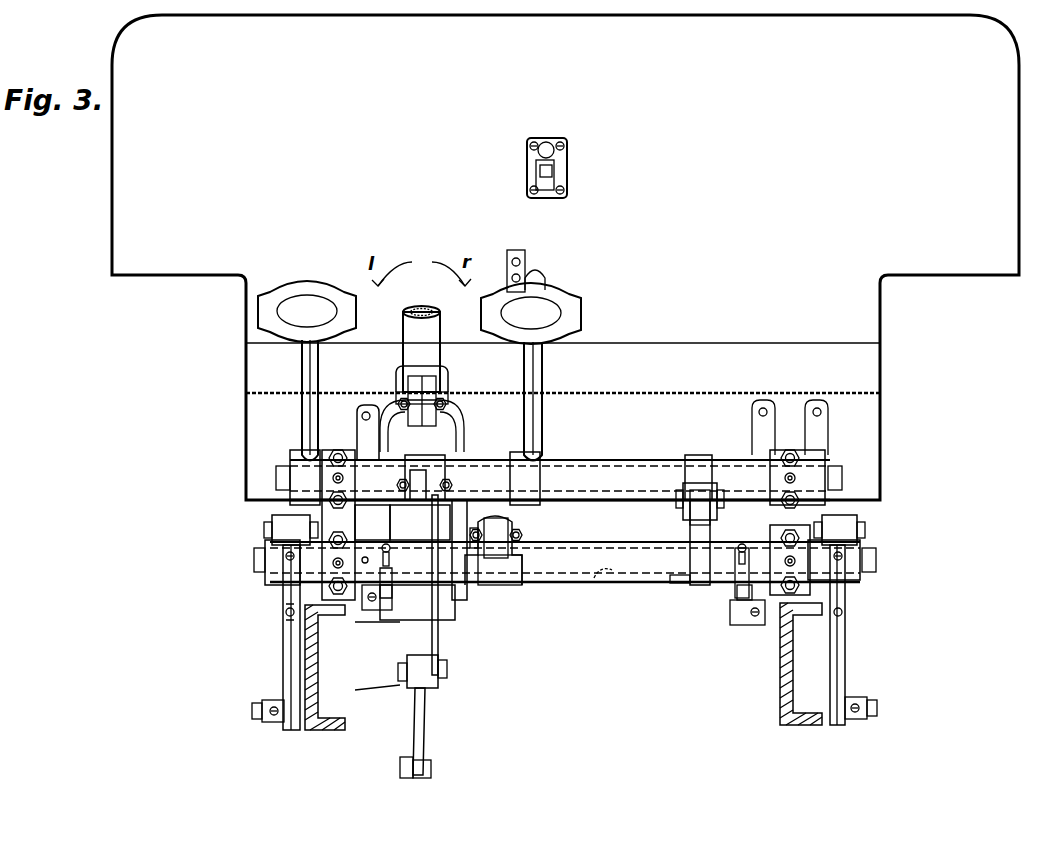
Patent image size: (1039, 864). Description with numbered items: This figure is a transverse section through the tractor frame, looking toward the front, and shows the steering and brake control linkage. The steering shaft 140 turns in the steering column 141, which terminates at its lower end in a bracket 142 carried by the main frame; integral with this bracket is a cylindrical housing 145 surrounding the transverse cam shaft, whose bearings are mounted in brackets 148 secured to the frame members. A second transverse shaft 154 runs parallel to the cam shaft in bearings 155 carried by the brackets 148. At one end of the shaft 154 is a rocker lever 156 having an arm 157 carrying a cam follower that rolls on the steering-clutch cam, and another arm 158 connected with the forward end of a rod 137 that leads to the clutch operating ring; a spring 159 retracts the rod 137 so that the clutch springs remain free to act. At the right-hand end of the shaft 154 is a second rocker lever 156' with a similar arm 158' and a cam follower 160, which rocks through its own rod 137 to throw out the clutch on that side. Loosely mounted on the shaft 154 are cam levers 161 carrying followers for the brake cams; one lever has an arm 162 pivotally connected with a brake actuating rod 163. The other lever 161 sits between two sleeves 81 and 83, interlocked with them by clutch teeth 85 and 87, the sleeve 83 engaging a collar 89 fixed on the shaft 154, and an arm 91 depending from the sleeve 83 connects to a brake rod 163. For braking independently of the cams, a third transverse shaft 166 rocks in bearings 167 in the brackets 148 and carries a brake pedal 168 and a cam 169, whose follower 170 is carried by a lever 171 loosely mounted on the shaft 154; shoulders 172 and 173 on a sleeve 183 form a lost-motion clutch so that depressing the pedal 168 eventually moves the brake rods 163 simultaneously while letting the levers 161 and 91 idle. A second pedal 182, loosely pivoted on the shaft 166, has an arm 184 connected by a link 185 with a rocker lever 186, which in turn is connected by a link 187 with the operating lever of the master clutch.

The sleeve 81 is at (548, 545).
The sleeve 83 is at (407, 545).
The clutch teeth 85 is at (516, 550).
The clutch tooth 87 is at (474, 530).
The collar 89 is at (364, 545).
The arm 91 is at (392, 578).
The rod 137 is at (265, 720).
The shaft 140 is at (421, 308).
The steering column 141 is at (432, 358).
The bracket 142 is at (446, 440).
The cylindrical housing 145 is at (445, 615).
The brackets 148 is at (350, 698).
The second transverse shaft 154 is at (596, 578).
The bearings 155 is at (330, 600).
The rocker lever 156 is at (257, 568).
The second rocker lever 156' is at (860, 551).
The arm 157 is at (285, 528).
The arm 158 is at (267, 637).
The arm 158' is at (866, 635).
The spring 159 is at (285, 612).
The cam follower 160 is at (845, 522).
The cam levers 161 is at (494, 560).
The arm 162 is at (742, 600).
The brake actuating rod 163 is at (375, 605).
The third transverse shaft 166 is at (478, 465).
The bearings 167 is at (310, 470).
The brake pedal 168 is at (566, 304).
The cam 169 is at (697, 458).
The follower 170 is at (695, 495).
The lever 171 is at (690, 530).
The shoulder 172 is at (735, 565).
The shoulder 173 is at (670, 578).
The second pedal 182 is at (292, 296).
The sleeve 183 is at (368, 470).
The arm 184 is at (418, 470).
The link 185 is at (458, 588).
The rocker lever 186 is at (424, 712).
The link 187 is at (400, 770).